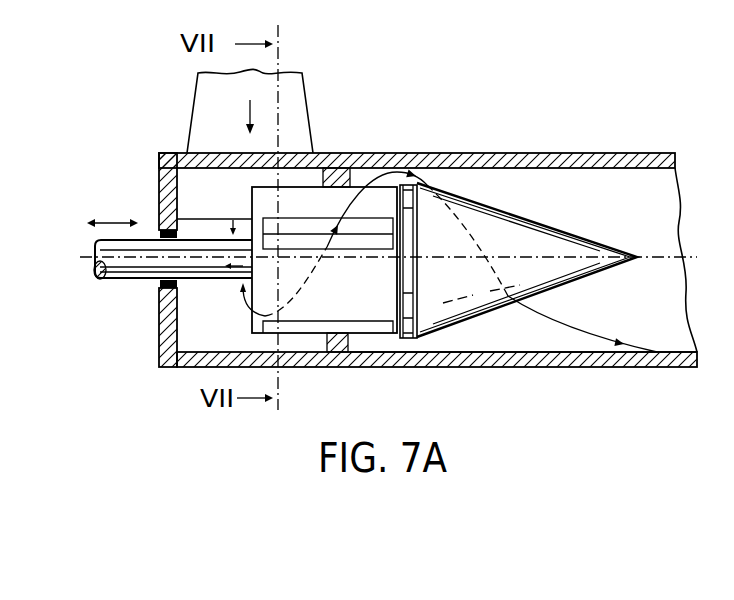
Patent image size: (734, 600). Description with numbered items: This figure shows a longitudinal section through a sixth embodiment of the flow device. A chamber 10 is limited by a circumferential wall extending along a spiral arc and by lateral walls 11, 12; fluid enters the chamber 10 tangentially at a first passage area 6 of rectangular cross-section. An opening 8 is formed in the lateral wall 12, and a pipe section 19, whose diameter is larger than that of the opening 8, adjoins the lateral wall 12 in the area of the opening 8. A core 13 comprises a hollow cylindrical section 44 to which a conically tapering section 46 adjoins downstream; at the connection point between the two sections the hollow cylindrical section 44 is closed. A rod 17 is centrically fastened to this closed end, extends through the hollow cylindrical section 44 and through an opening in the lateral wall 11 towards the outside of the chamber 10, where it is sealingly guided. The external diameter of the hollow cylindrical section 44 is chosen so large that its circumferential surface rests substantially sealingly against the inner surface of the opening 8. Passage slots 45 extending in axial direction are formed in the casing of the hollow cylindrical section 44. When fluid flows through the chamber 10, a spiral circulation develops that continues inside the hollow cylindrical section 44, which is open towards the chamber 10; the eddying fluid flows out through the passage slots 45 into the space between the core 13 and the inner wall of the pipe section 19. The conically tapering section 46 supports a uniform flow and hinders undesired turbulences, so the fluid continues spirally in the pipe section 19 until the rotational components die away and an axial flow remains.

The first passage area 6 is at (200, 233).
The opening 8 is at (345, 187).
The chamber 10 is at (301, 178).
The lateral wall 11 is at (162, 338).
The lateral wall 12 is at (327, 340).
The core 13 is at (380, 351).
The rod 17 is at (130, 270).
The pipe section 19 is at (517, 367).
The hollow cylindrical section 44 is at (264, 300).
The passage slots 45 is at (348, 240).
The conically tapering section 46 is at (500, 228).